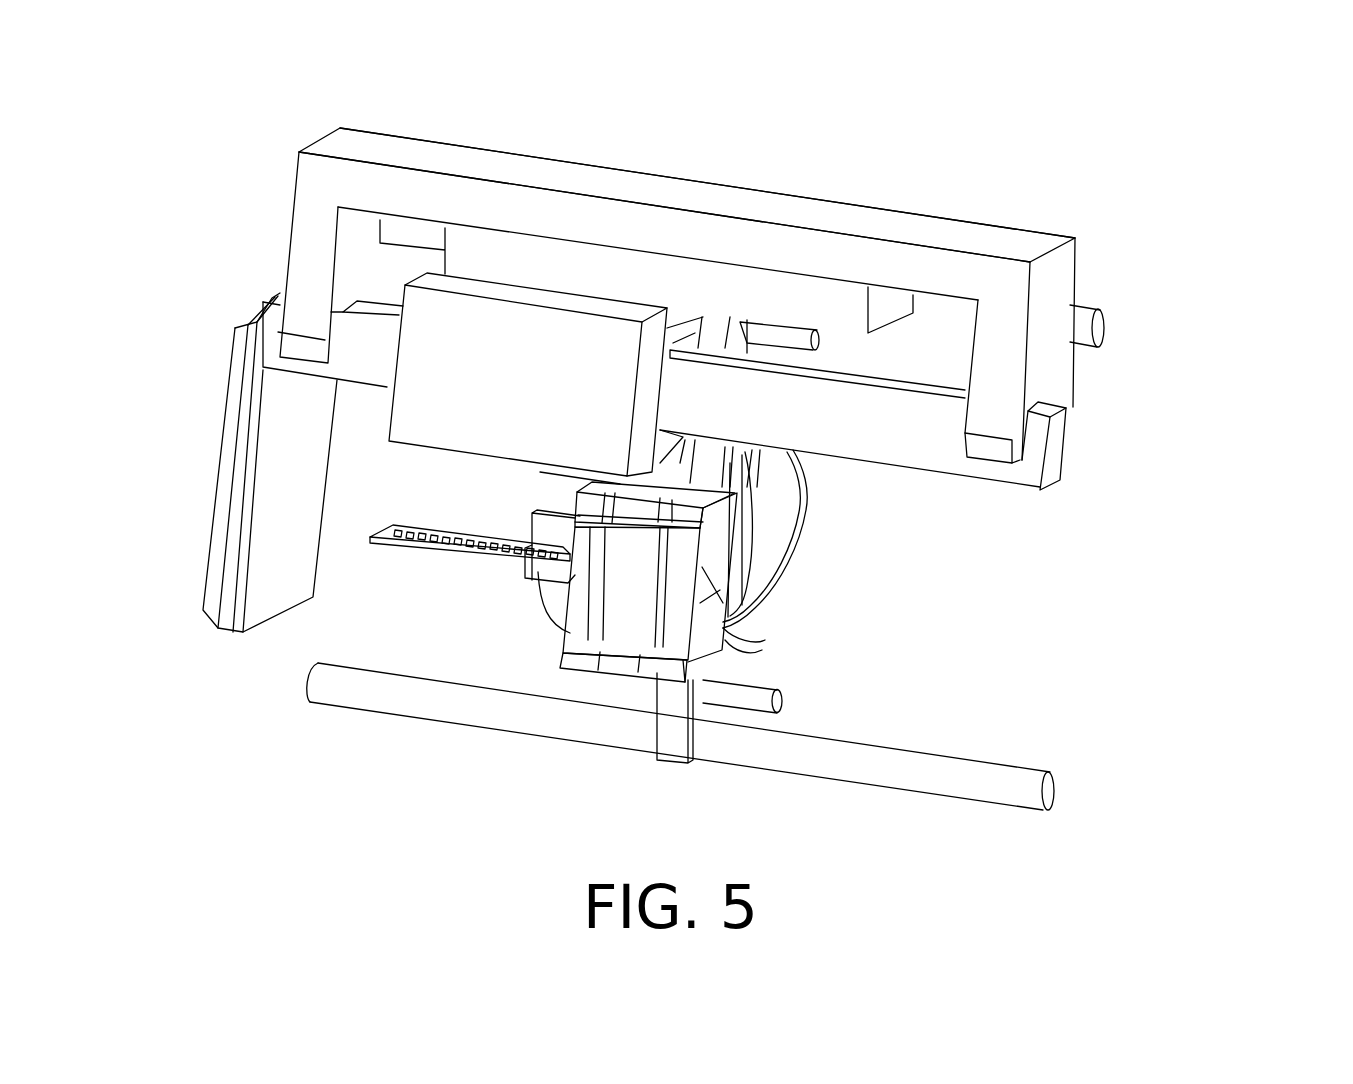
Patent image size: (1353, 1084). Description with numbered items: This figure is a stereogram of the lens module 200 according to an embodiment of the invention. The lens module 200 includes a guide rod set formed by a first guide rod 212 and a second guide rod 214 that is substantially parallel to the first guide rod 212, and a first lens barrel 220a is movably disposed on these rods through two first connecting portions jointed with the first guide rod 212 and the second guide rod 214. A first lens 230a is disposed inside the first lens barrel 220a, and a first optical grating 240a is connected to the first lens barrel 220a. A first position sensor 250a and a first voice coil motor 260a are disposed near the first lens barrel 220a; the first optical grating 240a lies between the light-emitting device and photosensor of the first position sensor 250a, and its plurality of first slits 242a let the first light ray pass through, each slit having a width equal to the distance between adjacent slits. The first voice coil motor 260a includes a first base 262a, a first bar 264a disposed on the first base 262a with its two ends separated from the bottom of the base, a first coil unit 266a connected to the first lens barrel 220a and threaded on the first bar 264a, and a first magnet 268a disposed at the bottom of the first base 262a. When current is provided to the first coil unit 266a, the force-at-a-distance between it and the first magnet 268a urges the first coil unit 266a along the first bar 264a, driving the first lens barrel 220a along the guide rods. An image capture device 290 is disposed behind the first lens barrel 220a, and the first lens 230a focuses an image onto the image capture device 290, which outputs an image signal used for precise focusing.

The lens module 200 is at (696, 488).
The first voice coil motor 260a is at (1132, 190).
The first base 262a is at (957, 272).
The first bar 264a is at (1035, 453).
The first coil unit 266a is at (572, 343).
The first magnet 268a is at (750, 297).
The first guide rod 212 is at (1078, 318).
The second guide rod 214 is at (340, 692).
The first lens barrel 220a is at (735, 650).
The first lens 230a is at (770, 507).
The first position sensor 250a is at (718, 535).
The first optical grating 240a is at (403, 528).
The first slits 242a is at (452, 538).
The image capture device 290 is at (245, 482).